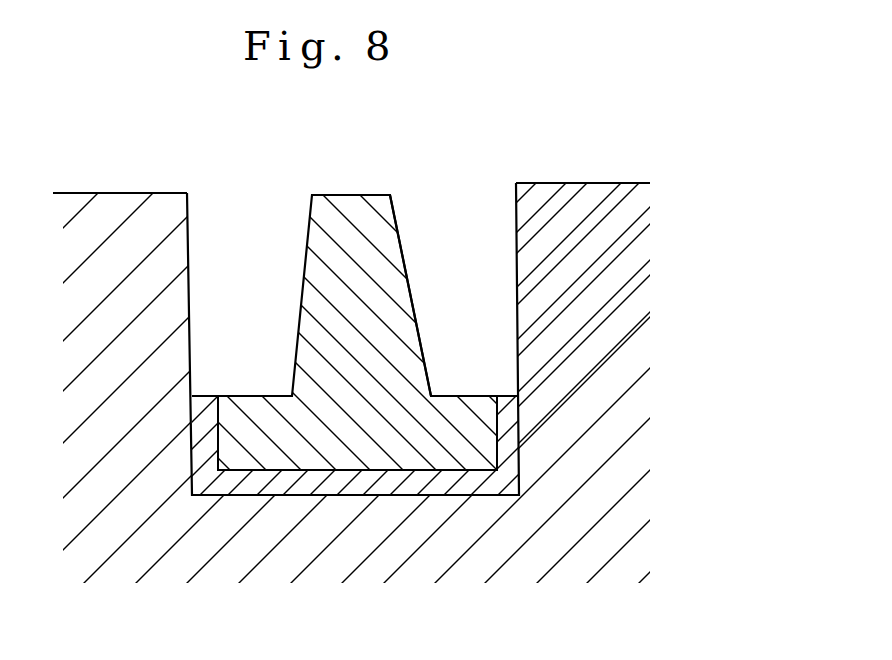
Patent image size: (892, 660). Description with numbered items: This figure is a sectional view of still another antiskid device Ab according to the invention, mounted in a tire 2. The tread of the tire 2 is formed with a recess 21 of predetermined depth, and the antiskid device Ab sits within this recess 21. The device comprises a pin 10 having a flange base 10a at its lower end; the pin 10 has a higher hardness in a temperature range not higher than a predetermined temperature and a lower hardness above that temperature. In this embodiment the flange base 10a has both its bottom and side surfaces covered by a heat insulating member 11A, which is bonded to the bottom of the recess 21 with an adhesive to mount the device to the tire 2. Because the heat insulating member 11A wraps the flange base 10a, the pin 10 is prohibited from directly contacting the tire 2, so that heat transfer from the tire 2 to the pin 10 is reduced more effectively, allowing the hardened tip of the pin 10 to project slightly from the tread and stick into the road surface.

The tire 2 is at (137, 228).
The recess 21 is at (227, 280).
The pin 10 is at (383, 330).
The flange base 10a is at (462, 412).
The heat insulating member 11A is at (498, 478).
The antiskid device Ab is at (410, 257).